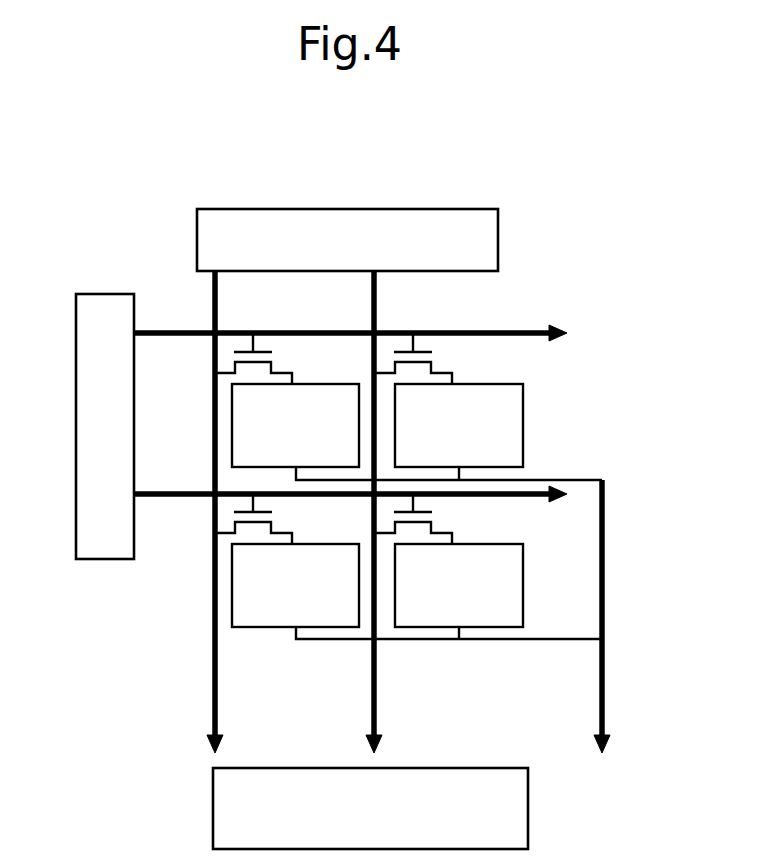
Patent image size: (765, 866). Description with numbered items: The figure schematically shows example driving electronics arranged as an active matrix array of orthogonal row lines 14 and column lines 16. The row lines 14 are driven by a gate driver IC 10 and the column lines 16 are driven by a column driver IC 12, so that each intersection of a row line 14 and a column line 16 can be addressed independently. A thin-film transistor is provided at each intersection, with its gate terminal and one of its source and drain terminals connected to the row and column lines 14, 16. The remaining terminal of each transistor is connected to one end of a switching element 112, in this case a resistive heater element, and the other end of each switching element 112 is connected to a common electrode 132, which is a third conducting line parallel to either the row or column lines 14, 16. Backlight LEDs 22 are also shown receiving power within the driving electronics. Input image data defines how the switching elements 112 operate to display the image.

The gate driver IC 10 is at (105, 426).
The column driver IC 12 is at (347, 240).
The row line 14 is at (514, 333).
The column line 16 is at (218, 688).
The backlight LEDs 22 is at (370, 808).
The switching element 112 is at (369, 480).
The common electrode 132 is at (605, 692).